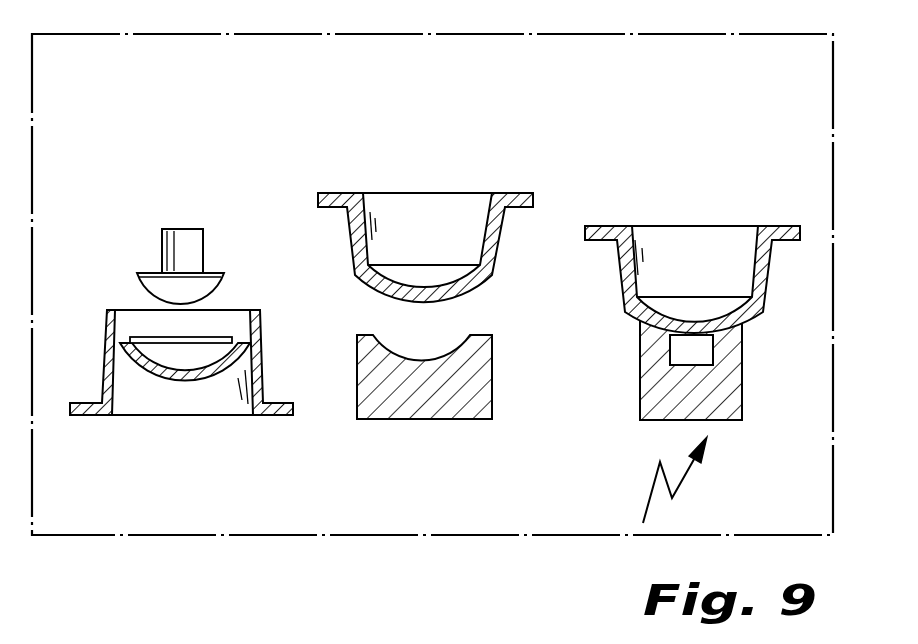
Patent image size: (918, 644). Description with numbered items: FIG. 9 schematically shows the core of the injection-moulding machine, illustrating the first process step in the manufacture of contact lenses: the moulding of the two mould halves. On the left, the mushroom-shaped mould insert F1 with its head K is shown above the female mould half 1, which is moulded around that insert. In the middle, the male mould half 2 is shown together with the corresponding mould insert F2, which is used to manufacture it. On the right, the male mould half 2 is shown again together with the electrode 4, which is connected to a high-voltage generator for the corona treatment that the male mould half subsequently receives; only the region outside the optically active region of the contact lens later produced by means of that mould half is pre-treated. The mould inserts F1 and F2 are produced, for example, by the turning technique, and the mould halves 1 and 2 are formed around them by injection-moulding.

The female mould half 1 is at (93, 418).
The male mould half 2 is at (500, 195).
The electrode 4 is at (647, 397).
The head of the mushroom K is at (153, 282).
The mould insert F1 is at (193, 249).
The mould insert F2 is at (410, 400).